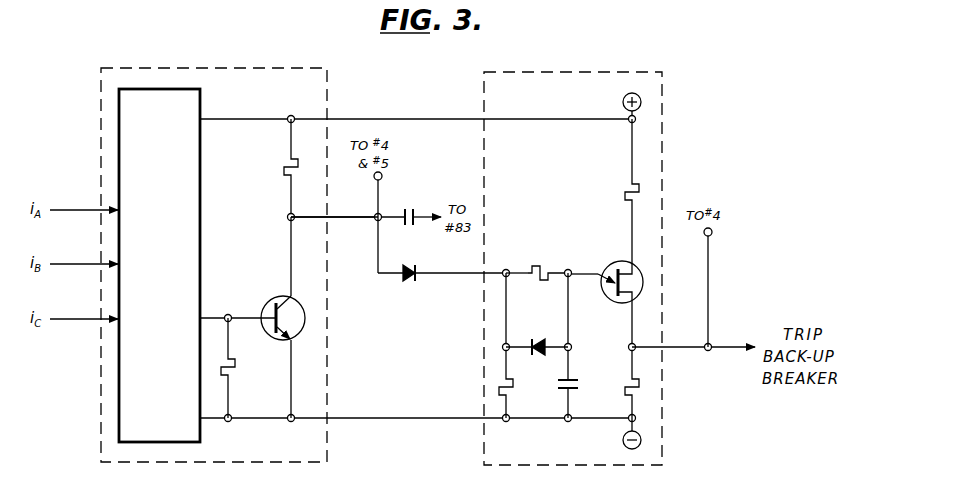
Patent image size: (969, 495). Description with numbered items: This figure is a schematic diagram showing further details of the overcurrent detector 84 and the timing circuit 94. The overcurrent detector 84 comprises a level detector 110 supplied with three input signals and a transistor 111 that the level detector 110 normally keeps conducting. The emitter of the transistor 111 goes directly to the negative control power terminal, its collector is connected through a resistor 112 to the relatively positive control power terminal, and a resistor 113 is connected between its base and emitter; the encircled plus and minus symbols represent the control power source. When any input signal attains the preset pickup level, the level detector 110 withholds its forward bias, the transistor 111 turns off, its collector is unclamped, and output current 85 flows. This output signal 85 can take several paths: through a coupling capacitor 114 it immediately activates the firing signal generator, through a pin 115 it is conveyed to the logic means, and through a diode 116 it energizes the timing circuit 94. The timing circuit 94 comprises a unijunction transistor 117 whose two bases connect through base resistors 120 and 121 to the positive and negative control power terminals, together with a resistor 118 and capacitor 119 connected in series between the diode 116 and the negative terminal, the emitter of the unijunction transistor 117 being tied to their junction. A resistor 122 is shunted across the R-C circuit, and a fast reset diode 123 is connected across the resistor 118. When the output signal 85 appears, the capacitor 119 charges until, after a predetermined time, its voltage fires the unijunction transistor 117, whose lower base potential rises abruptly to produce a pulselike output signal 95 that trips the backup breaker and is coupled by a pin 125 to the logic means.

The overcurrent detector 84 is at (156, 66).
The timing circuit 94 is at (597, 70).
The level detector 110 is at (171, 272).
The transistor 111 is at (276, 300).
The resistor 112 is at (284, 171).
The resistor 113 is at (237, 365).
The coupling capacitor 114 is at (411, 208).
The pin 115 is at (374, 179).
The diode 116 is at (407, 284).
The output current 85 is at (368, 227).
The unijunction transistor 117 is at (614, 264).
The resistor 118 is at (536, 265).
The capacitor 119 is at (576, 383).
The base resistor 120 is at (624, 193).
The base resistor 121 is at (624, 392).
The resistor 122 is at (516, 387).
The diode 123 is at (538, 342).
The pin 125 is at (713, 237).
The output signal 95 is at (703, 358).